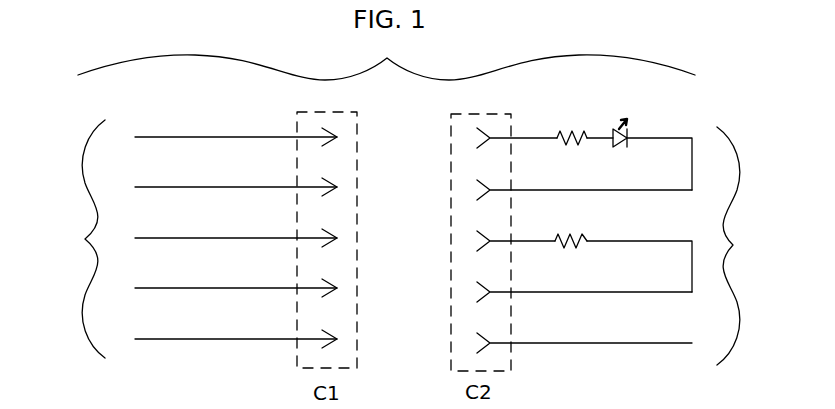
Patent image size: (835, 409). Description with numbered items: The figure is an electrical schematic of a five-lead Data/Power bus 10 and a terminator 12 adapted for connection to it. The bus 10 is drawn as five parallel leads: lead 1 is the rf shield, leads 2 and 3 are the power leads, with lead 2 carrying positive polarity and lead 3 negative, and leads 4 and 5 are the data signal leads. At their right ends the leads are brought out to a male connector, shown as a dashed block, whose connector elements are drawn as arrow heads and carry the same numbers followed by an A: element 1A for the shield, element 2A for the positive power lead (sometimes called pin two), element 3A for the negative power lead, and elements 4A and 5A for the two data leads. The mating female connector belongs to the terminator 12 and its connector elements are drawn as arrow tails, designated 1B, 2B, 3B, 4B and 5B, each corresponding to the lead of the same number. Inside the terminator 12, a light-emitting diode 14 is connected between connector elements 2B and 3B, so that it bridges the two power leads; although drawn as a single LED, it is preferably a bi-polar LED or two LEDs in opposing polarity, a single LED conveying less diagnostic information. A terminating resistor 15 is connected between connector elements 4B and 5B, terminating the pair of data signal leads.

The rf shield 1 is at (155, 334).
The positive power lead 2 is at (155, 132).
The negative power lead 3 is at (155, 182).
The data signal lead 4 is at (155, 233).
The data signal lead 5 is at (155, 283).
The connector element 1A is at (320, 336).
The connector element 2A is at (320, 134).
The connector element 3A is at (320, 184).
The connector element 4A is at (320, 235).
The connector element 5A is at (320, 285).
The female connector element 1B is at (476, 340).
The female connector element 2B is at (476, 135).
The female connector element 3B is at (476, 187).
The female connector element 4B is at (476, 238).
The female connector element 5B is at (476, 289).
The Data/Power bus 10 is at (85, 239).
The terminator 12 is at (733, 245).
The light-emitting diode 14 is at (632, 130).
The terminating resistor 15 is at (592, 233).